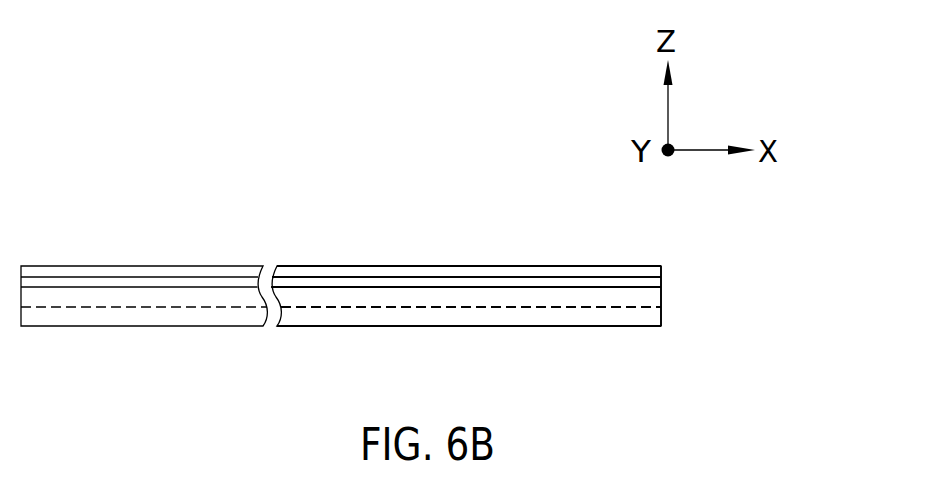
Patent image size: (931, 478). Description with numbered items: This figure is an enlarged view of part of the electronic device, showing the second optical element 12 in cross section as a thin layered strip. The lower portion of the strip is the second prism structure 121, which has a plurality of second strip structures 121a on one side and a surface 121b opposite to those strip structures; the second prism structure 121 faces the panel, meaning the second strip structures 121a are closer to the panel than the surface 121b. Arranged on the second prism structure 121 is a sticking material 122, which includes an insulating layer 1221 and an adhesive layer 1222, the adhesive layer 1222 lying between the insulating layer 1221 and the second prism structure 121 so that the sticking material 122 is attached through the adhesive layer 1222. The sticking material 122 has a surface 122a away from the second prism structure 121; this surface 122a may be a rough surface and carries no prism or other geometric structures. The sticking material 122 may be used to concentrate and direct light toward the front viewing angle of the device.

The second optical element 12 is at (97, 176).
The sticking material 122 is at (753, 250).
The insulating layer 1221 is at (662, 267).
The adhesive layer 1222 is at (662, 277).
The surface 122a is at (458, 266).
The second prism structure 121 is at (753, 308).
The second strip structures 121a is at (661, 298).
The surface 121b is at (652, 327).